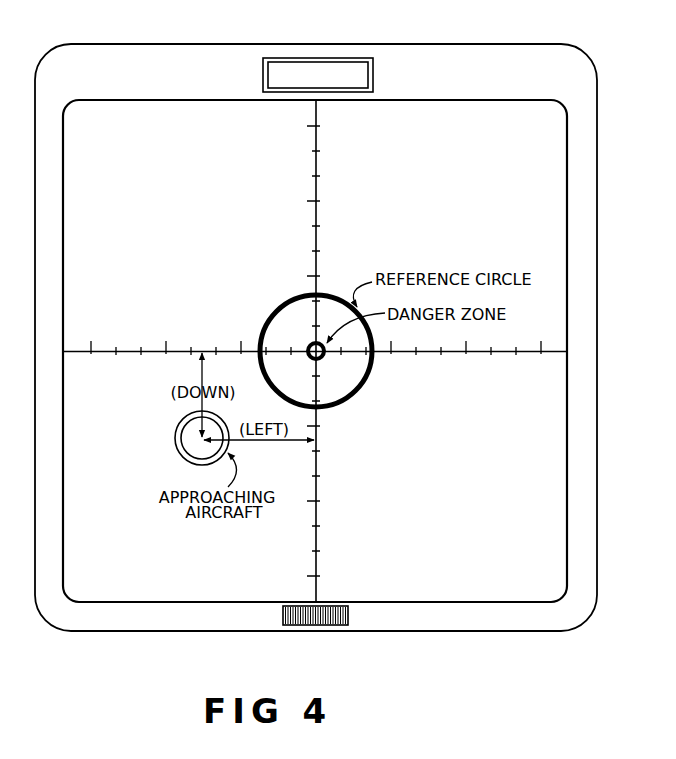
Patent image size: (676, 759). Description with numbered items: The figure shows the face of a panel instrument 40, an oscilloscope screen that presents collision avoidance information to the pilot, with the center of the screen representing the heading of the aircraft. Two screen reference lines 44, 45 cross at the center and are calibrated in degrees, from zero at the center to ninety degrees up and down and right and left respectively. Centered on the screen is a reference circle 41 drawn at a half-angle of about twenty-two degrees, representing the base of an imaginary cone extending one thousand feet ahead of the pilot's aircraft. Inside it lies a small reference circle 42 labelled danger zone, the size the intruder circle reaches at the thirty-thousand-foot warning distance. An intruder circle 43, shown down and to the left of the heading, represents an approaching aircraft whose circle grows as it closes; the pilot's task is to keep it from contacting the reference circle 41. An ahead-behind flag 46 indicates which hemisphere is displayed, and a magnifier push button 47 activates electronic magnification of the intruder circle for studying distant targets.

The panel instrument 40 is at (458, 58).
The reference circle 41 is at (279, 305).
The danger zone reference circle 42 is at (321, 357).
The intruder circle 43 is at (181, 437).
The screen reference line 44 is at (318, 190).
The screen reference line 45 is at (430, 354).
The ahead-behind flag 46 is at (337, 62).
The magnifier push button 47 is at (313, 628).